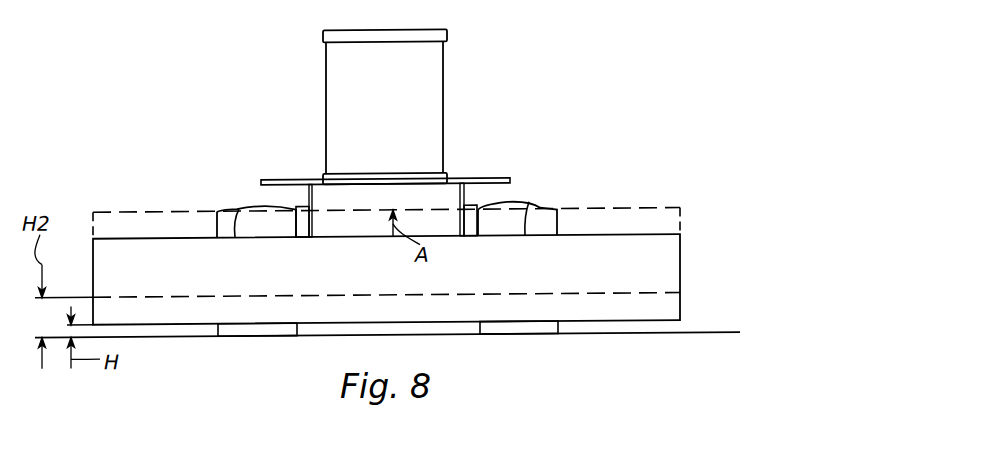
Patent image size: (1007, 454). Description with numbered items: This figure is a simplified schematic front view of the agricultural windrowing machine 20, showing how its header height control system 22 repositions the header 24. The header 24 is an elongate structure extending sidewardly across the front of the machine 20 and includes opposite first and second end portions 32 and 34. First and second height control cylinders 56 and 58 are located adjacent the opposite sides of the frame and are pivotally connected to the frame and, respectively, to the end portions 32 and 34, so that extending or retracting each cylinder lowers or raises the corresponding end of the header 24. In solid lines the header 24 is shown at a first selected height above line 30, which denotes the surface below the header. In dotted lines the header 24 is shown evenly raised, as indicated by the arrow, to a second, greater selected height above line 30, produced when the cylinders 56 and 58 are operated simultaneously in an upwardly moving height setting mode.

The agricultural windrowing machine 20 is at (558, 76).
The header height control system 22 is at (480, 206).
The header 24 is at (680, 213).
The line 30 is at (708, 338).
The first end portion 32 is at (528, 211).
The second end portion 34 is at (237, 211).
The first height control cylinder 56 is at (470, 209).
The second height control cylinder 58 is at (300, 209).